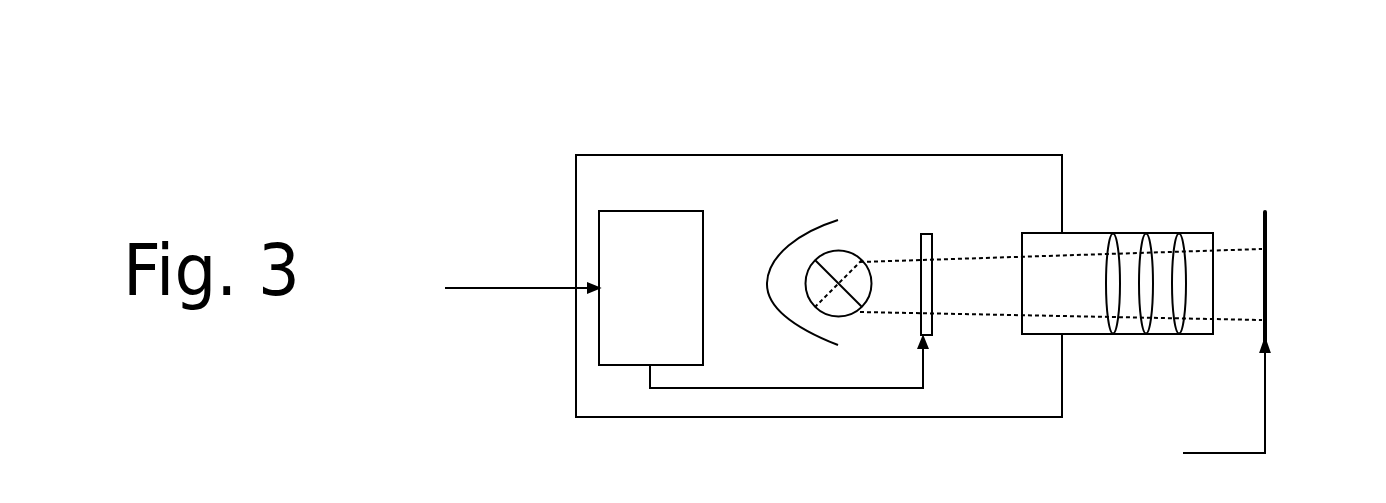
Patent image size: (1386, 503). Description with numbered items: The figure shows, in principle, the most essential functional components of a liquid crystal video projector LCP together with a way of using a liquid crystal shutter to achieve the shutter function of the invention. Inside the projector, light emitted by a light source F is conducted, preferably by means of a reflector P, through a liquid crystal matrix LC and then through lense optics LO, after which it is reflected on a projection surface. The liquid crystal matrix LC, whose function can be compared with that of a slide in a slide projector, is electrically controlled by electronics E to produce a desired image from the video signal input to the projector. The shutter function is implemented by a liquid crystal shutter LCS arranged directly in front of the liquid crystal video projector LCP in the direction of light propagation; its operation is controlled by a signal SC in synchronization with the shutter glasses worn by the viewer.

The liquid crystal video projector LCP is at (522, 144).
The electronics E is at (763, 299).
The reflector P is at (805, 238).
The light source F is at (835, 262).
The liquid crystal matrix LC is at (931, 252).
The lense optics LO is at (1130, 235).
The liquid crystal shutter LCS is at (1268, 230).
The control signal SC is at (1196, 407).